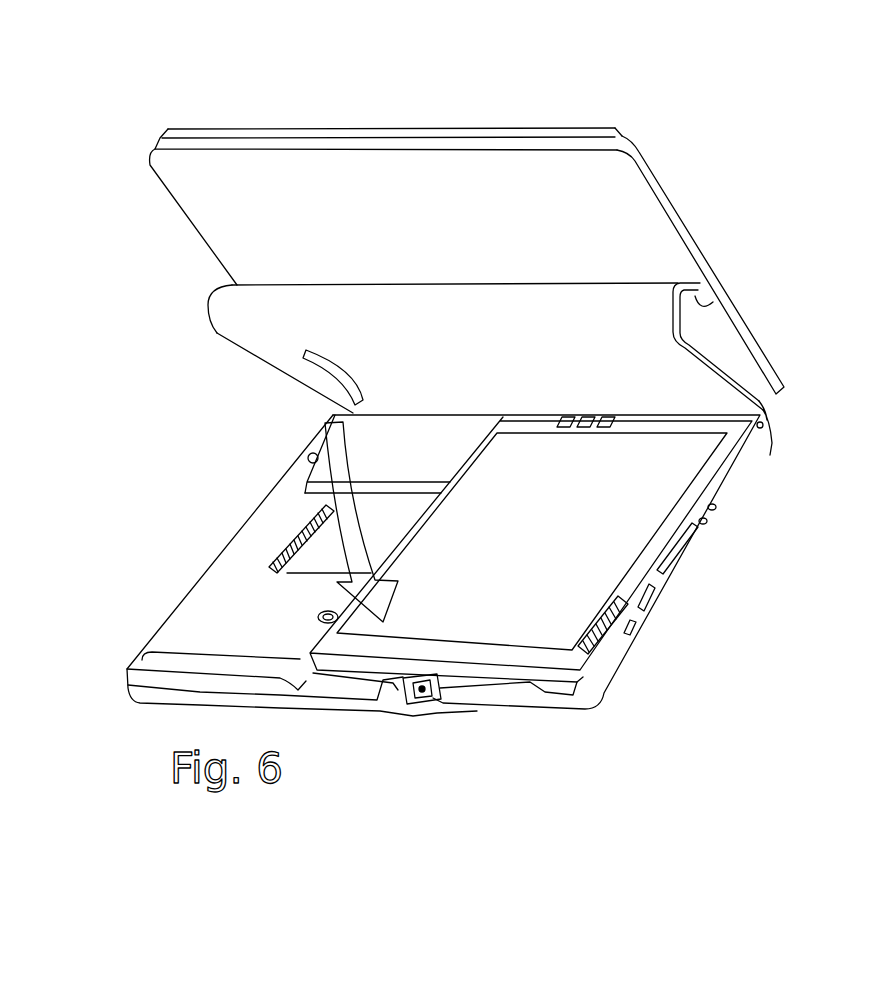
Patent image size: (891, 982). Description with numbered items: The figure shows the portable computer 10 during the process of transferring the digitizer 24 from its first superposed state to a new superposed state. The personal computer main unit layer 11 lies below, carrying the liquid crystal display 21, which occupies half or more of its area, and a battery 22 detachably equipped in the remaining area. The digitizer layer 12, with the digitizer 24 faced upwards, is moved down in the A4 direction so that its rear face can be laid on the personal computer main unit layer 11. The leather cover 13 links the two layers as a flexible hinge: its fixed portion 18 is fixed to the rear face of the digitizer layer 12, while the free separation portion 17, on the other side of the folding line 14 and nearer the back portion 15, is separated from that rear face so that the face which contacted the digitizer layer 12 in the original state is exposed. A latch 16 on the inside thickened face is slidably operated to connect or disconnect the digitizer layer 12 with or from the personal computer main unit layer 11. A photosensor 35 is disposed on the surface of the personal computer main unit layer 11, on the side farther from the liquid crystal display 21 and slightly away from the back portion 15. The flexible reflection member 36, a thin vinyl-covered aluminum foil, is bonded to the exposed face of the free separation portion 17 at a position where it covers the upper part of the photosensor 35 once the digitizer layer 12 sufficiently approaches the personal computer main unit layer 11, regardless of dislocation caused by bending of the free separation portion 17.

The portable computer 10 is at (84, 234).
The personal computer main unit layer 11 is at (694, 548).
The digitizer layer 12 is at (467, 259).
The cover 13 is at (272, 366).
The folding line 14 is at (712, 305).
The back portion 15 is at (776, 434).
The latch 16 is at (427, 707).
The free separation portion 17 is at (238, 329).
The fixed portion 18 is at (718, 343).
The liquid crystal display 21 is at (509, 627).
The battery 22 is at (408, 433).
The digitizer 24 is at (284, 130).
The photosensor 35 is at (307, 459).
The flexible reflection member 36 is at (347, 370).
The A4 direction A4 is at (330, 492).